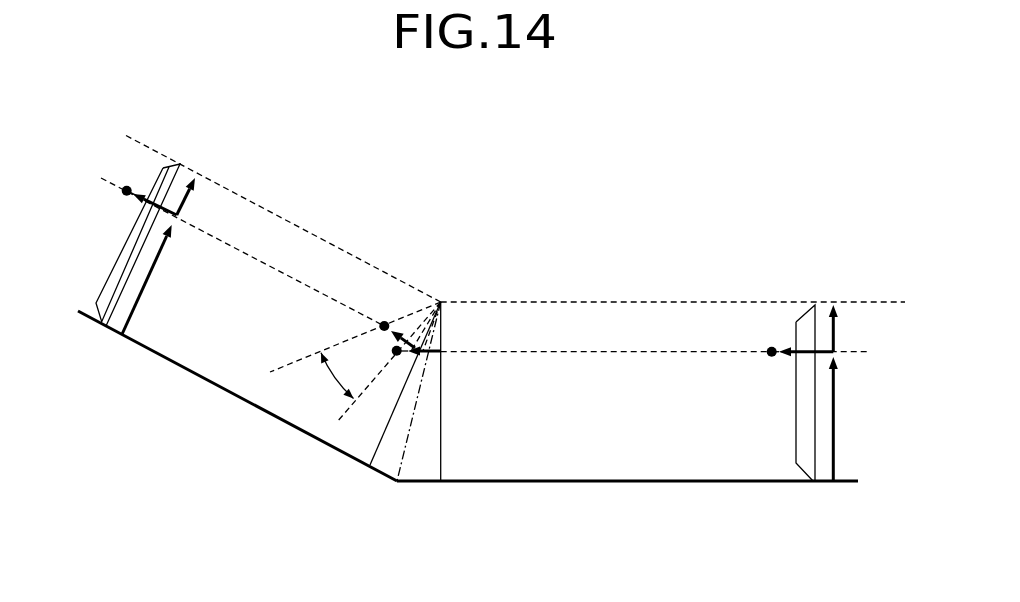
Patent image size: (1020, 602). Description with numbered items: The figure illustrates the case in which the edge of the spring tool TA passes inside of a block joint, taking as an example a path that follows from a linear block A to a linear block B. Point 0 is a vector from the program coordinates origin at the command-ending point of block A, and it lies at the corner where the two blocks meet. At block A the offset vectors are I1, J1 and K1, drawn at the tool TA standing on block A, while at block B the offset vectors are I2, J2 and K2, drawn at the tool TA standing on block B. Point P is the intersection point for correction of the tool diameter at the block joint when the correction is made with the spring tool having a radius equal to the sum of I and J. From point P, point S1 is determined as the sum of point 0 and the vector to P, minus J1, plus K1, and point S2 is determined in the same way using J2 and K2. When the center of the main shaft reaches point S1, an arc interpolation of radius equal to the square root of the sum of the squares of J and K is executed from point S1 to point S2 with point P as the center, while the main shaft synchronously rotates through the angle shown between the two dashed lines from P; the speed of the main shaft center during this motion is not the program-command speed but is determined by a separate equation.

The block A is at (237, 396).
The block B is at (627, 501).
The point O 0 is at (412, 409).
The point P is at (515, 308).
The spring tool TA is at (801, 407).
The offset vector I1 is at (156, 280).
The offset vector J1 is at (205, 202).
The offset vector K1 is at (239, 233).
The point S1 is at (378, 326).
The point S2 is at (401, 354).
The offset vector K2 is at (779, 334).
The offset vector J2 is at (852, 328).
The offset vector I2 is at (853, 419).